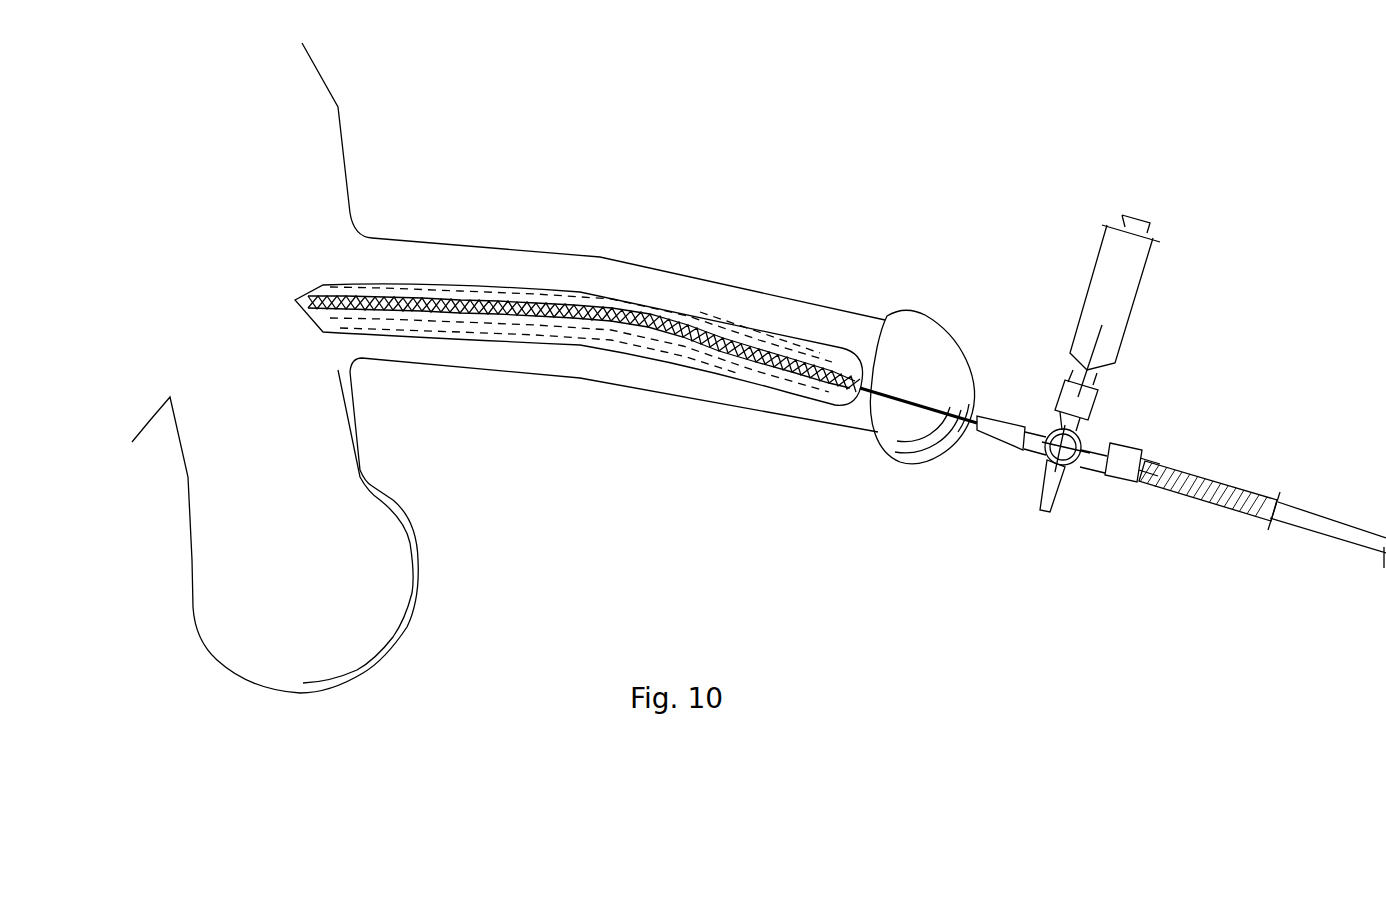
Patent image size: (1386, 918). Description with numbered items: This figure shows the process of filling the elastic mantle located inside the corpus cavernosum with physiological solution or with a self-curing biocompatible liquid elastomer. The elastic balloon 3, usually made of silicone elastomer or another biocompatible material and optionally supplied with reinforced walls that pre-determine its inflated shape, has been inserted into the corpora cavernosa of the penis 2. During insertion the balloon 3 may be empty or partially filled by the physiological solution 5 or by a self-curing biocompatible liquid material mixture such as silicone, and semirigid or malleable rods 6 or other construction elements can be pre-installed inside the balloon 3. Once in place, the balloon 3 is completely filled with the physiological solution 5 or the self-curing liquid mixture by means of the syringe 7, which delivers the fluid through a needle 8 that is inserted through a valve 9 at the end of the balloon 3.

The penis 2 is at (543, 273).
The elastic balloon 3 is at (467, 288).
The physiological solution 5 is at (660, 315).
The semirigid or malleable rods 6 is at (723, 343).
The syringe 7 is at (1245, 490).
The needle 8 is at (922, 410).
The valve 9 is at (848, 378).